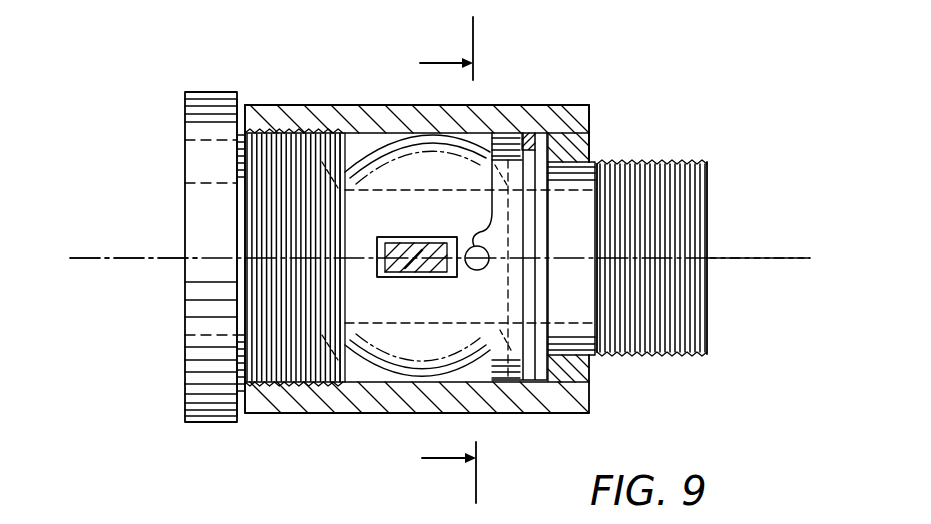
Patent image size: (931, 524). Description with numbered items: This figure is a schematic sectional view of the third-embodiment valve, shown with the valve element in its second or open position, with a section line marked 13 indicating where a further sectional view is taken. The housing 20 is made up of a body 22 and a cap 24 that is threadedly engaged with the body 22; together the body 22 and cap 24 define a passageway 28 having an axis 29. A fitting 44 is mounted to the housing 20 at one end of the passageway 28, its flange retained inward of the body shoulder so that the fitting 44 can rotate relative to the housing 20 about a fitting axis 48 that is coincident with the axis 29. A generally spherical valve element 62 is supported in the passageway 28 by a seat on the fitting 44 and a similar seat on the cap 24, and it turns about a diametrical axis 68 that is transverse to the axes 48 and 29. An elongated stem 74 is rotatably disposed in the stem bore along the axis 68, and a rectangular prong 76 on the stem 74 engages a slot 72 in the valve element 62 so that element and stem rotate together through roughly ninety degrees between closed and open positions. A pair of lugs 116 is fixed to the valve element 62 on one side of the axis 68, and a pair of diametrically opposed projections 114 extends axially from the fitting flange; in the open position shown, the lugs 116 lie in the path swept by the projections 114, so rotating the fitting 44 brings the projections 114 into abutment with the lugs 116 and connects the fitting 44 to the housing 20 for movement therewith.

The housing 20 is at (278, 100).
The body 22 is at (583, 111).
The cap 24 is at (205, 414).
The passageway 28 is at (356, 142).
The axis 29 is at (103, 263).
The fitting 44 is at (714, 166).
The fitting axis 48 is at (750, 256).
The valve element 62 is at (360, 370).
The diametrical axis 68 is at (413, 263).
The slot 72 is at (394, 240).
The stem 74 is at (416, 285).
The prong 76 is at (432, 253).
The projections 114 is at (478, 232).
The lugs 116 is at (478, 272).
The section line for FIG. 13 is at (445, 261).